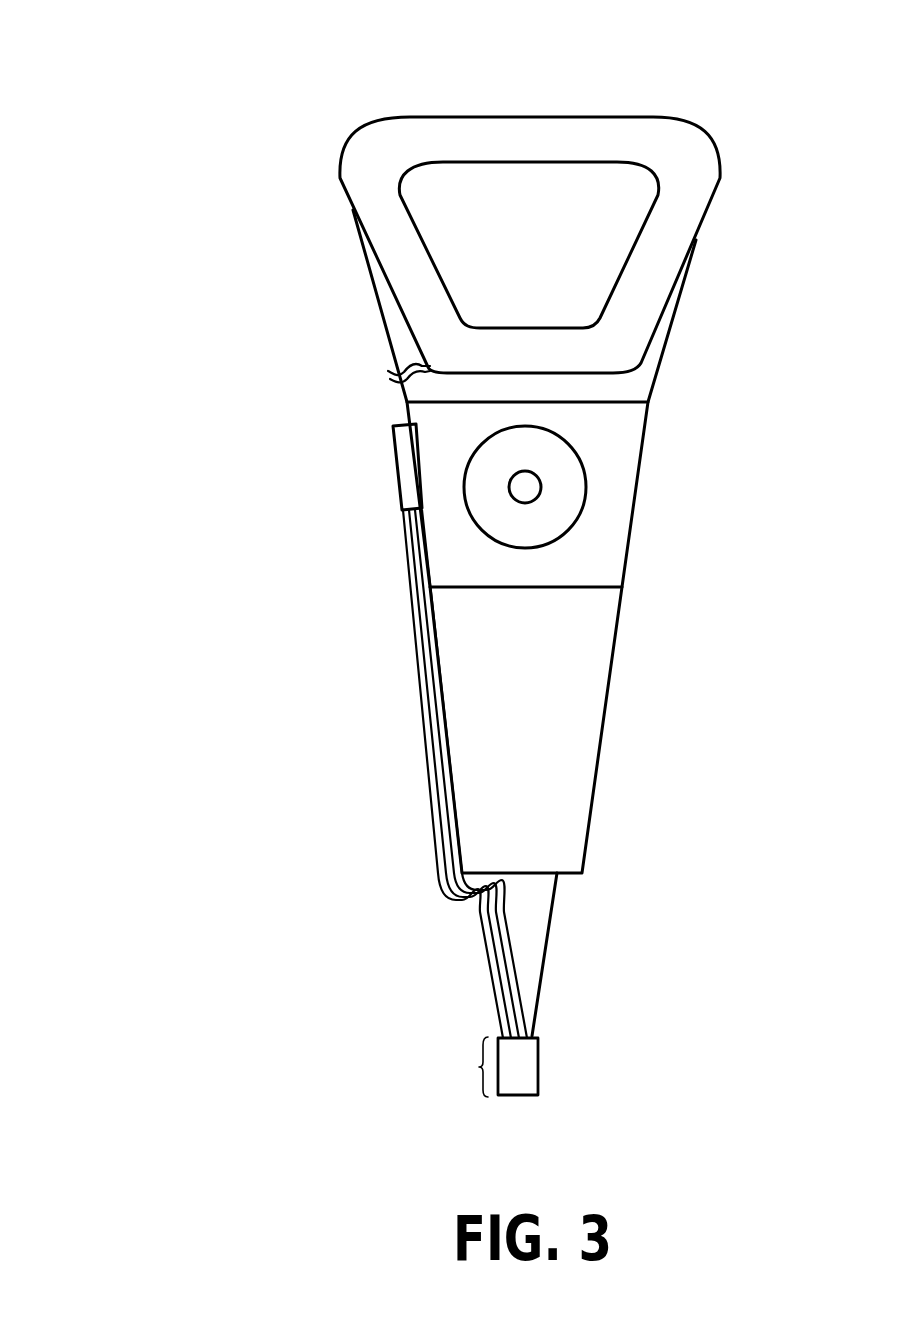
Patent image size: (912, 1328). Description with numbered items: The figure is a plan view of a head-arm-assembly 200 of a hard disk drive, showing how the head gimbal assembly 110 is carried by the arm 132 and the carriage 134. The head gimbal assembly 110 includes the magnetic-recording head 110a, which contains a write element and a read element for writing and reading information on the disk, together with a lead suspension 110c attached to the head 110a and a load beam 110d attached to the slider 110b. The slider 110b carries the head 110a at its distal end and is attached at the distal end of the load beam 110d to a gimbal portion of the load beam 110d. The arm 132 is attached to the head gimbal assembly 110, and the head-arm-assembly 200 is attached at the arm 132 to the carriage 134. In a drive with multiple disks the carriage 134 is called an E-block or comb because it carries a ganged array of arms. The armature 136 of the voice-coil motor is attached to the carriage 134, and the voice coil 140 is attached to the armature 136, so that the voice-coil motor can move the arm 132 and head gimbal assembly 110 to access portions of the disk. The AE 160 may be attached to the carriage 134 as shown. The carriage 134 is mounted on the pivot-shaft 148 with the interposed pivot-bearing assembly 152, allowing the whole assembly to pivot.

The handle assembly 200 is at (124, 93).
The voice coil 140 is at (407, 270).
The armature 136 is at (407, 345).
The AE 160 is at (407, 477).
The pivot-shaft 148 is at (524, 486).
The pivot-bearing assembly 152 is at (563, 498).
The carriage 134 is at (590, 547).
The arm 132 is at (518, 680).
The head gimbal assembly 110 is at (290, 823).
The magnetic-recording head 110a is at (507, 1083).
The slider 110b is at (482, 1068).
The lead suspension 110c is at (497, 960).
The load beam 110d is at (520, 918).